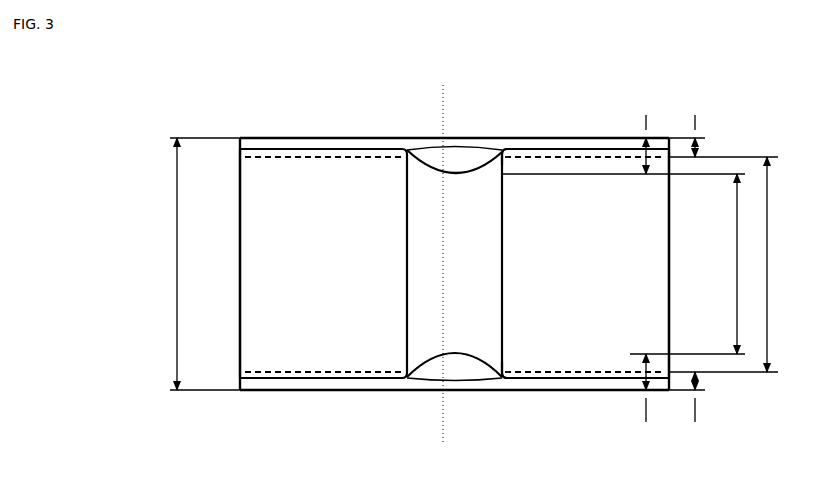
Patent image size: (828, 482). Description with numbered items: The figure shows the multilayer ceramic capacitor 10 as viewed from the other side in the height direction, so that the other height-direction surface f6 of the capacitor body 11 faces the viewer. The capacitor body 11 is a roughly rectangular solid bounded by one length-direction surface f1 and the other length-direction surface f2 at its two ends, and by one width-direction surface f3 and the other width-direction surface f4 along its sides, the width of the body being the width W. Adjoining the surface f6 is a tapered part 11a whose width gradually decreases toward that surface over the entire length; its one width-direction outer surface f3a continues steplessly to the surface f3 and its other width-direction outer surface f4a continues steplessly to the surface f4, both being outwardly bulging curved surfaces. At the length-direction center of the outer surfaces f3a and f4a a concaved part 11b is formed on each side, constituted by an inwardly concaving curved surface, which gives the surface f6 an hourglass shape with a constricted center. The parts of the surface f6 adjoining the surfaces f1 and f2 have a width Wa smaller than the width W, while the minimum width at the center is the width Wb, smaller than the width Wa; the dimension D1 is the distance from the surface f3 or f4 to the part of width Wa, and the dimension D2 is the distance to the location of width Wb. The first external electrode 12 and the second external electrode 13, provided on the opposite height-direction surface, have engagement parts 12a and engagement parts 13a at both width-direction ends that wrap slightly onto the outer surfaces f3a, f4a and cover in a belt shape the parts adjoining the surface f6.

The multilayer ceramic capacitor 10 is at (247, 134).
The capacitor body 11 is at (366, 137).
The tapered part 11a is at (407, 148).
The concaved part 11b is at (448, 158).
The first external electrode 12 is at (267, 247).
The engagement parts 12a is at (318, 156).
The second external electrode 13 is at (640, 248).
The engagement parts 13a is at (590, 156).
The one length-direction surface f1 is at (240, 280).
The other length-direction surface f2 is at (670, 275).
The one width-direction surface f3 is at (500, 148).
The one width-direction outer surface f3a is at (546, 149).
The other width-direction surface f4 is at (513, 391).
The other width-direction outer surface f4a is at (545, 379).
The other height-direction surface f6 is at (453, 322).
The width W is at (199, 264).
The width Wa is at (730, 264).
The width Wb is at (632, 264).
The width-direction dimension D1 is at (701, 266).
The width-direction dimension D2 is at (674, 266).